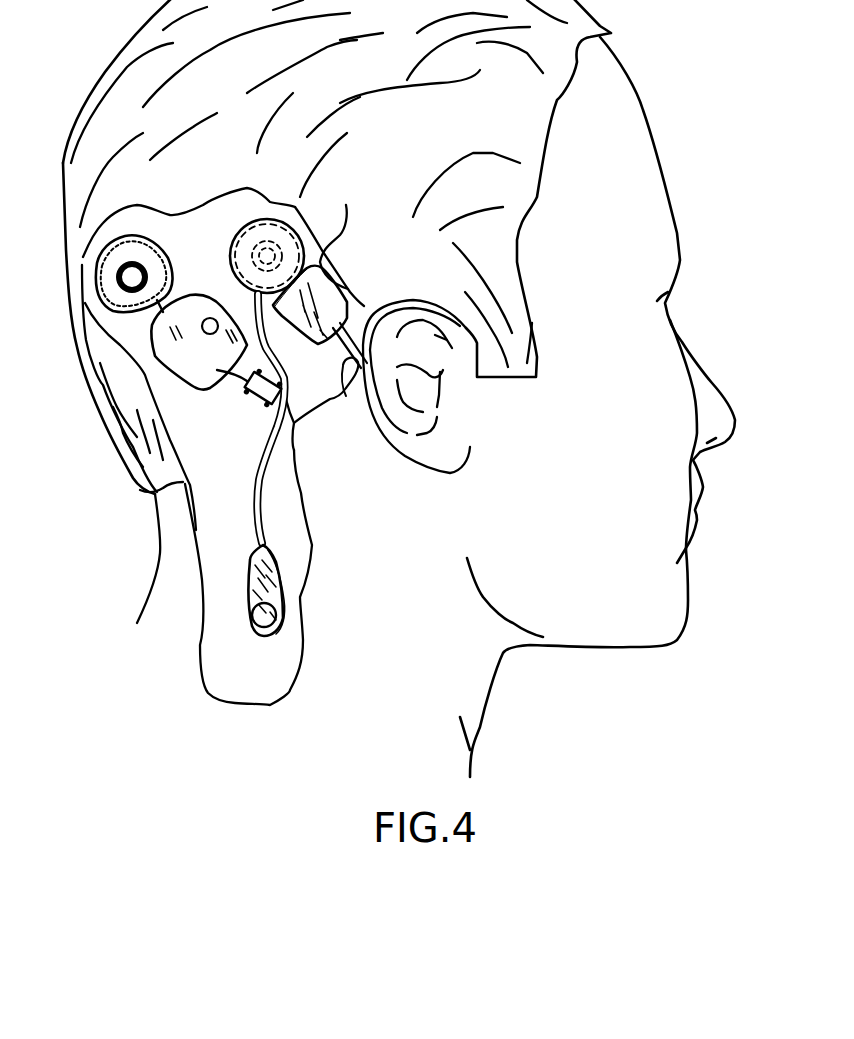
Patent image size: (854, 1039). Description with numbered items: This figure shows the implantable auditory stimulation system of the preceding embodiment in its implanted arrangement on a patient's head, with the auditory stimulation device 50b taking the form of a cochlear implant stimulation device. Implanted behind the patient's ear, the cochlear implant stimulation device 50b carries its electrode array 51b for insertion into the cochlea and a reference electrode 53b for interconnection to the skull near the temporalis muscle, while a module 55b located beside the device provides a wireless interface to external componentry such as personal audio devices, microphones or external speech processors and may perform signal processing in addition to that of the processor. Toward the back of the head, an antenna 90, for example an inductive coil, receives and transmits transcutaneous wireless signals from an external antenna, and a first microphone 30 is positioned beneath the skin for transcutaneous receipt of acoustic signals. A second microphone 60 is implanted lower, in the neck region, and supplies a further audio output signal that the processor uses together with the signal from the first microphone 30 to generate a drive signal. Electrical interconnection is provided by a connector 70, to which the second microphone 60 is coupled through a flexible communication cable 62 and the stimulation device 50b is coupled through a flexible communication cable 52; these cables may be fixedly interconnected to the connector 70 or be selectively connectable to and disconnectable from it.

The first microphone 30 is at (201, 338).
The auditory stimulation device 50b is at (348, 290).
The housing 51b is at (365, 328).
The communication cable 52 is at (294, 425).
The lead wires 53b is at (330, 412).
The module 55b is at (295, 207).
The second microphone 60 is at (246, 612).
The communication cable 62 is at (260, 498).
The connector 70 is at (268, 396).
The antenna 90 is at (97, 273).